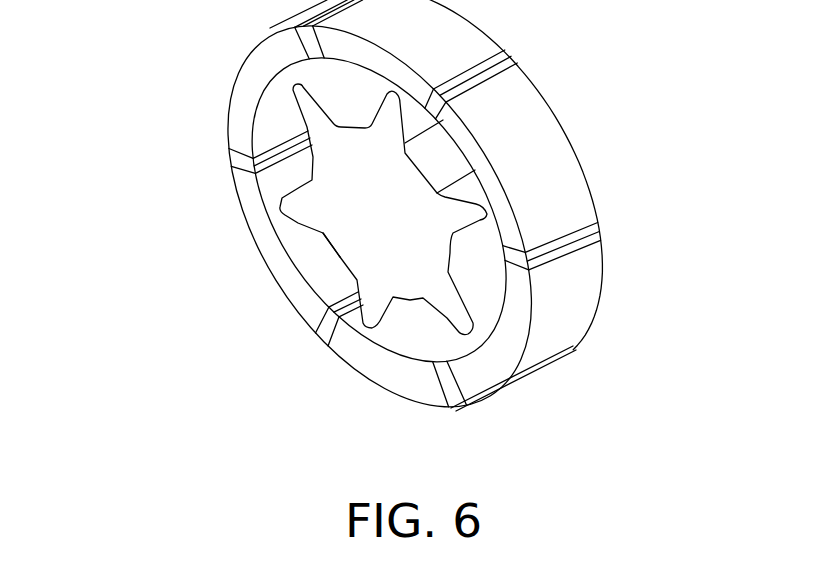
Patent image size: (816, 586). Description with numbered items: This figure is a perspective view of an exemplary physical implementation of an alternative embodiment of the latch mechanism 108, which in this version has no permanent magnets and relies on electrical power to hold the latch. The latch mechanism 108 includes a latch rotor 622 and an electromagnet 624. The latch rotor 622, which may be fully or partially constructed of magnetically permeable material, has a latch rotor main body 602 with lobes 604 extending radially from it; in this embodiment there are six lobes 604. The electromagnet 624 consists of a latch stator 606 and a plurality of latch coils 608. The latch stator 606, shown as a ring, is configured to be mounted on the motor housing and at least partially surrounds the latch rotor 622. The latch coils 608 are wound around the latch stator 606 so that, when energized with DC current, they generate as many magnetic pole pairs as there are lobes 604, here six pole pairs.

The latch mechanism 108 is at (182, 98).
The latch rotor main body 602 is at (412, 232).
The lobes 604 is at (450, 313).
The latch stator 606 is at (562, 136).
The latch coils 608 is at (518, 59).
The latch rotor 622 is at (326, 264).
The electromagnet 624 is at (606, 192).